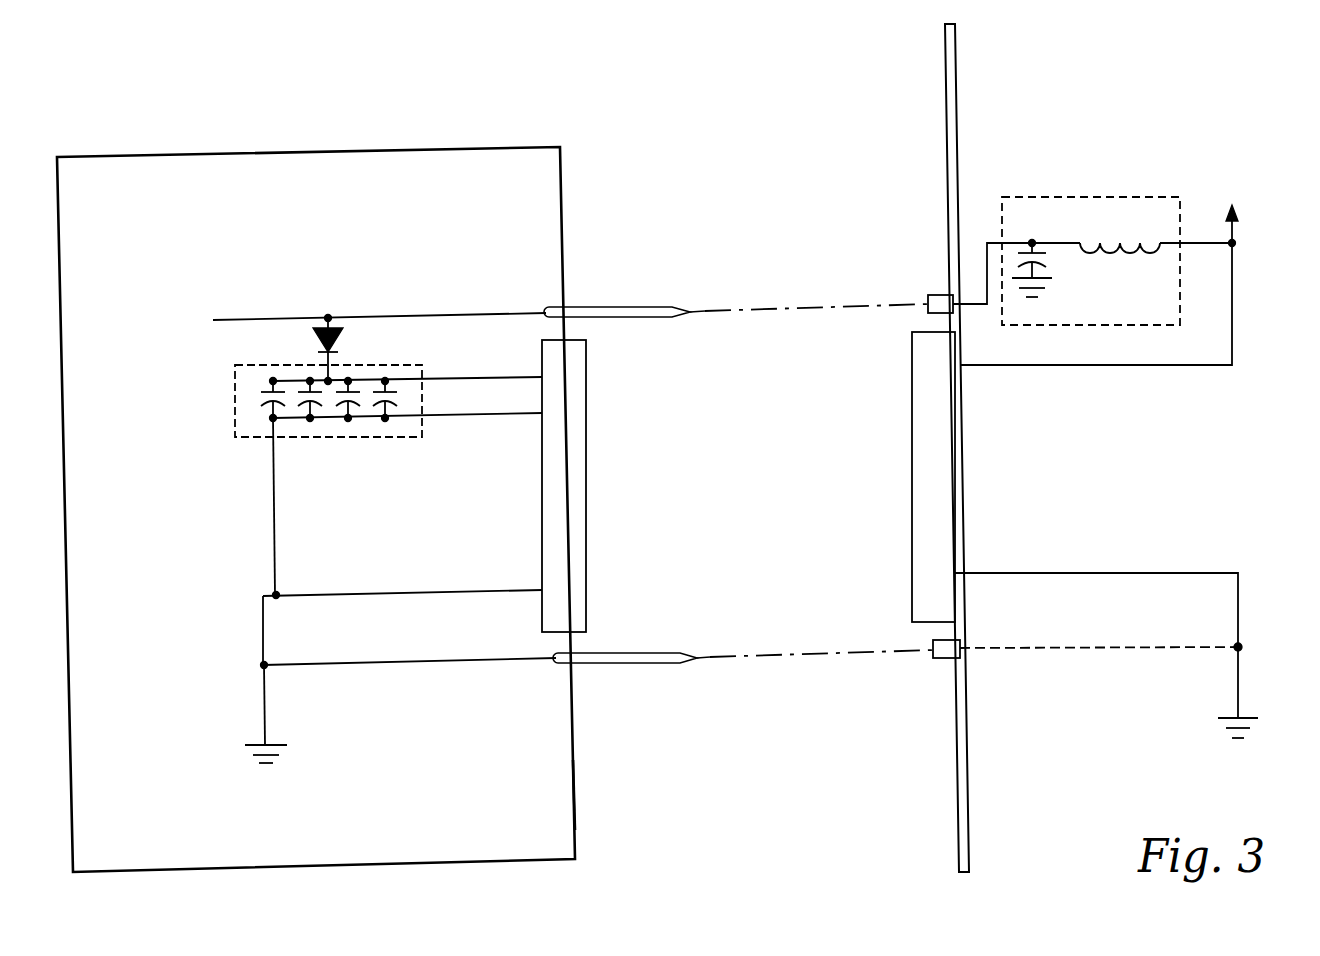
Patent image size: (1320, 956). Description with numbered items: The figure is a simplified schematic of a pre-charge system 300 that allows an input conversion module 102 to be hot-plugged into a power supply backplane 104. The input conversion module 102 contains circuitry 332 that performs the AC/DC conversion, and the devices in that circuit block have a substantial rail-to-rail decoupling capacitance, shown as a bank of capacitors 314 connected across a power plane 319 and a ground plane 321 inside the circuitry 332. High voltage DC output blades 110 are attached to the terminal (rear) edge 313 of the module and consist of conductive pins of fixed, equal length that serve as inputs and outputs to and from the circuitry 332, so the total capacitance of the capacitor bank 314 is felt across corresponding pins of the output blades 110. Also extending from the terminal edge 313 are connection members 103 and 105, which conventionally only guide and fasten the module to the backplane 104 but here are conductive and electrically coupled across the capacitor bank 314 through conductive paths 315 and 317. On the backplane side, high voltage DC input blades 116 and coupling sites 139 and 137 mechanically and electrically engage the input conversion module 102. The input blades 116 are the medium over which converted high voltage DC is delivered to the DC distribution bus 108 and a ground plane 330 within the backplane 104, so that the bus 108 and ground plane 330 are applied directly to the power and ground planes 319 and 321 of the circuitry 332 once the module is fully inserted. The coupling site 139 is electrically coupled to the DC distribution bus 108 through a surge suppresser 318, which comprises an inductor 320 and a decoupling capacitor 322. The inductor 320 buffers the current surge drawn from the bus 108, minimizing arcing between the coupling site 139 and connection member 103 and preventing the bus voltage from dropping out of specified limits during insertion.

The pre-charge system 300 is at (778, 91).
The input conversion module 102 is at (470, 148).
The power supply backplane 104 is at (957, 103).
The connection member 103 is at (612, 317).
The connection member 105 is at (620, 663).
The DC distribution bus 108 is at (1234, 278).
The high voltage DC output blades 110 is at (586, 435).
The high voltage DC input blades 116 is at (912, 400).
The coupling site 137 is at (945, 660).
The coupling site 139 is at (938, 295).
The terminal edge 313 is at (592, 788).
The capacitor bank 314 is at (235, 402).
The conductive path 315 is at (296, 318).
The conductive path 317 is at (375, 663).
The surge suppresser 318 is at (1092, 241).
The power plane 319 is at (452, 377).
The inductor 320 is at (1112, 262).
The ground plane 321 is at (405, 597).
The decoupling capacitor 322 is at (1048, 262).
The ground plane 330 is at (1240, 718).
The circuitry 332 is at (516, 460).